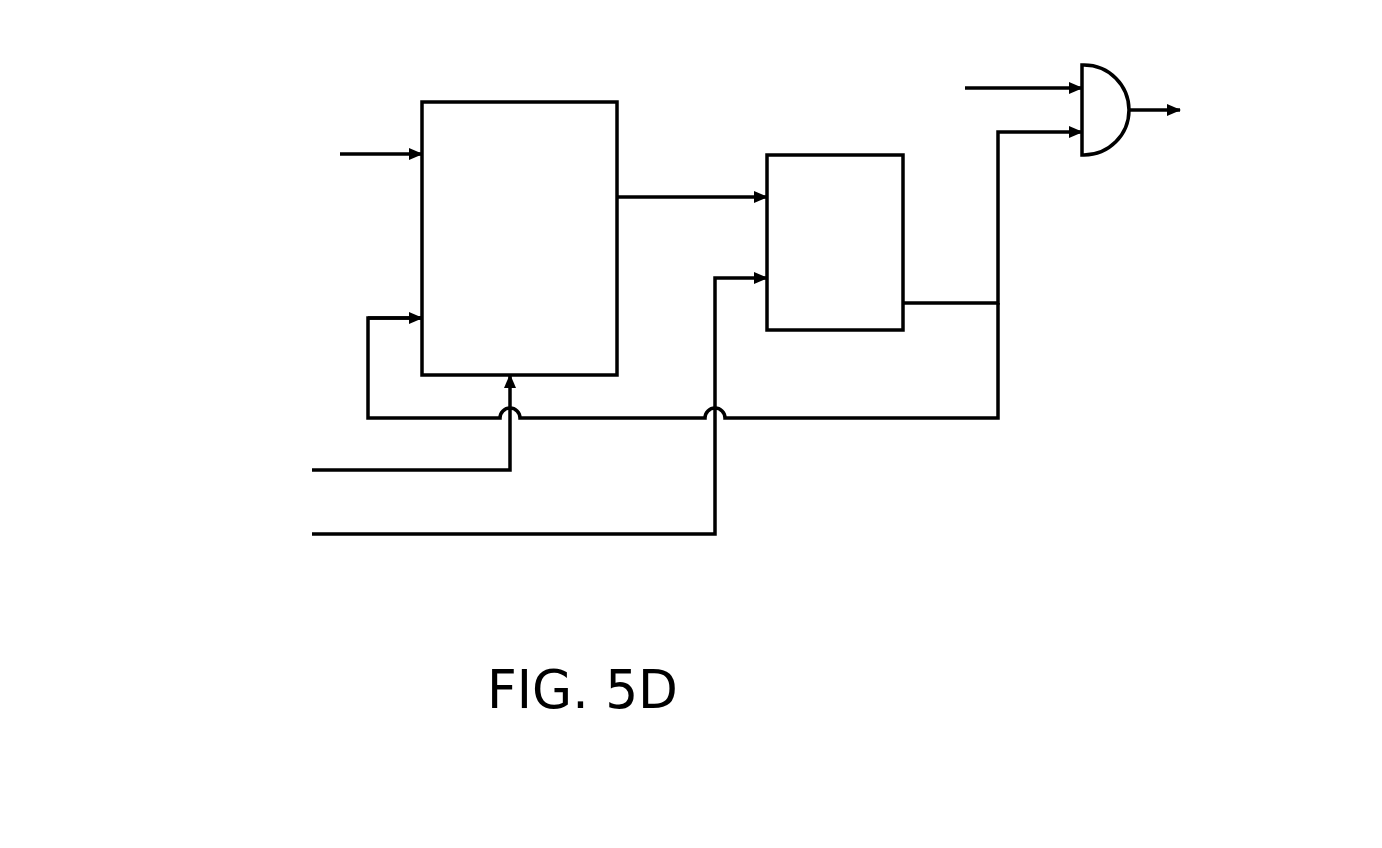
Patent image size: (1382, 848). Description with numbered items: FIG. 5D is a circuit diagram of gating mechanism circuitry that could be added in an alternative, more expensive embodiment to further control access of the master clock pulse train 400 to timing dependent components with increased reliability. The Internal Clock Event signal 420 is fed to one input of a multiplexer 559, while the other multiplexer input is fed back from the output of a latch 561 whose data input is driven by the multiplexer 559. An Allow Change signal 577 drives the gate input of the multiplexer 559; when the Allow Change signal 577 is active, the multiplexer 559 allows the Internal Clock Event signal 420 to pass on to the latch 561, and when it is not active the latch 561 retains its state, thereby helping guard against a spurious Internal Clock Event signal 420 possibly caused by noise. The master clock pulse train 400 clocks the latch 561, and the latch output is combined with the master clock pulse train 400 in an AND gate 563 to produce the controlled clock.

The Internal Clock Event signal 420 is at (236, 131).
The multiplexer 559 is at (518, 101).
The latch 561 is at (843, 332).
The AND gate 563 is at (1120, 82).
The master clock pulse train 400 is at (872, 63).
The Allow Change signal 577 is at (196, 452).